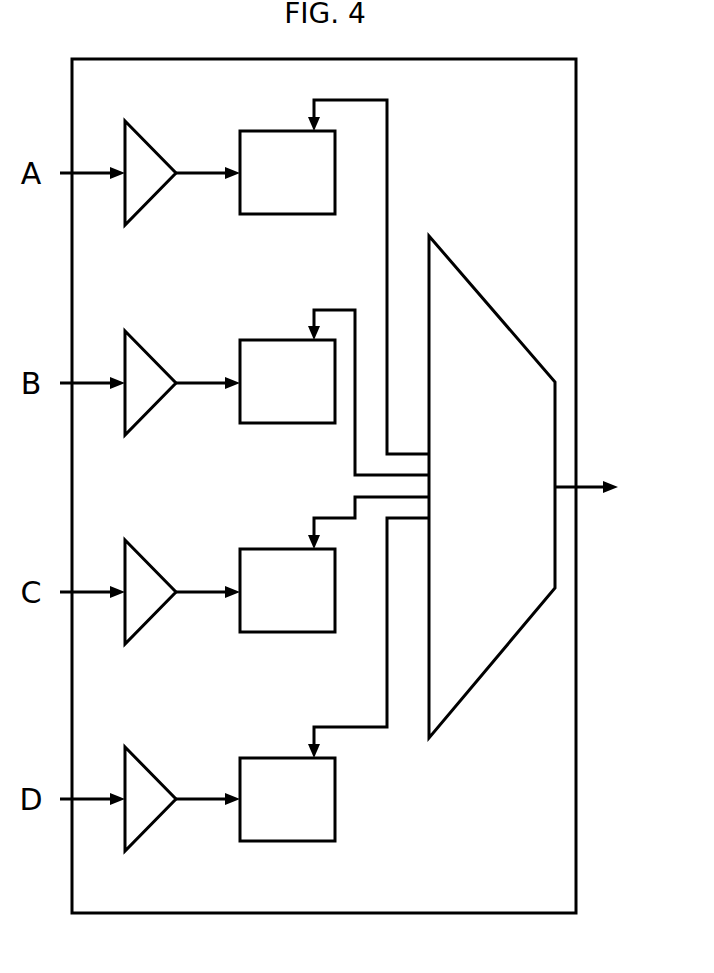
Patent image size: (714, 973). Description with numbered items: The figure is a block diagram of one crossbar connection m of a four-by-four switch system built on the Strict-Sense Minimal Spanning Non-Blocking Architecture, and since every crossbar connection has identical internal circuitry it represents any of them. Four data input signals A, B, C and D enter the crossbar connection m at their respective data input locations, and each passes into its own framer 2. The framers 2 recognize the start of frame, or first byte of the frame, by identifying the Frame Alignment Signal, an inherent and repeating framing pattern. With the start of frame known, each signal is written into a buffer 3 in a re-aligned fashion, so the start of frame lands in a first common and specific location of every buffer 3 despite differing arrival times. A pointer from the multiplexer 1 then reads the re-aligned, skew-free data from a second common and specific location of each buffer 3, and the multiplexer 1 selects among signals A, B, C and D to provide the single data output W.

The multiplexer 1 is at (542, 487).
The framer 2 is at (182, 486).
The buffer 3 is at (334, 470).
The crossbar connection m is at (324, 486).